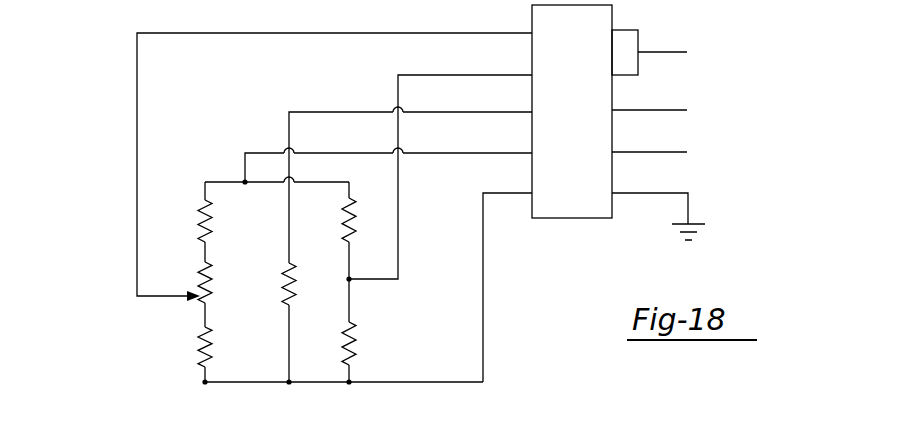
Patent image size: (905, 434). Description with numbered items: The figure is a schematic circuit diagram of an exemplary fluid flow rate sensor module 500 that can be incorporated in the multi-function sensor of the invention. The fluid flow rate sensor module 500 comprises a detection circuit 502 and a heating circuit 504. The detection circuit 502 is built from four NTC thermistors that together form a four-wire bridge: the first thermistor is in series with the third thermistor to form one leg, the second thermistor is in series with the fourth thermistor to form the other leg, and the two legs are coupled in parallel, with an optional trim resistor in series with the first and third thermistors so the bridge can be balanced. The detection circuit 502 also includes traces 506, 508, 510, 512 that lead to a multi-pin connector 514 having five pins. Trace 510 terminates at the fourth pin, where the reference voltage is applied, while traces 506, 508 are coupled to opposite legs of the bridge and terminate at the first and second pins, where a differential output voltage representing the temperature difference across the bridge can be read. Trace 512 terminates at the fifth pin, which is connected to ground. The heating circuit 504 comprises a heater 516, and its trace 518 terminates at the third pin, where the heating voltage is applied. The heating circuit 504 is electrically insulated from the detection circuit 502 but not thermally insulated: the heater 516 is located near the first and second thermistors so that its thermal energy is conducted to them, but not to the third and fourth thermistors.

The fluid flow rate sensor module 500 is at (85, 135).
The detection circuit 502 is at (184, 379).
The heating circuit 504 is at (266, 271).
The trace 506 is at (137, 212).
The trace 508 is at (398, 216).
The trace 510 is at (245, 165).
The trace 512 is at (483, 268).
The multi-pin connector 514 is at (600, 218).
The heater 516 is at (293, 290).
The trace 518 is at (289, 125).